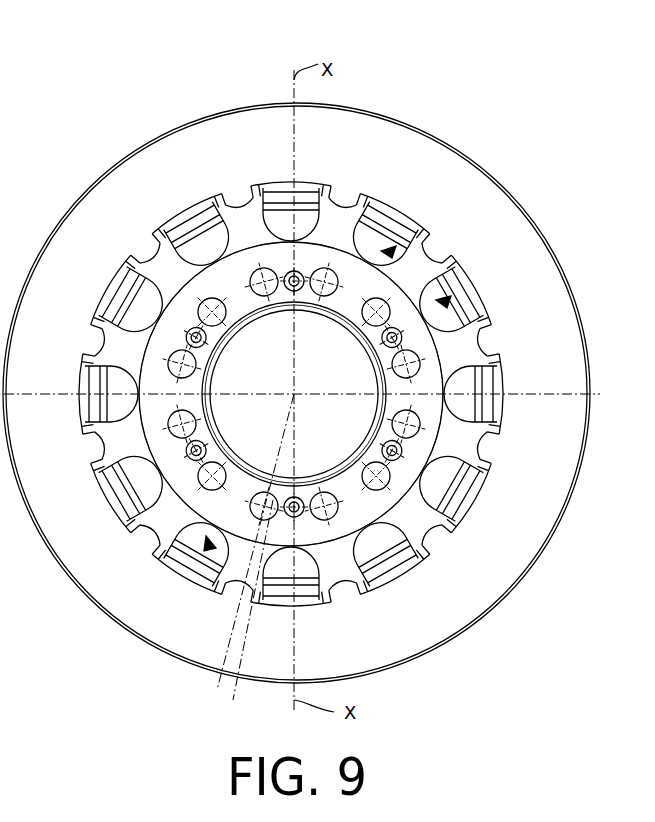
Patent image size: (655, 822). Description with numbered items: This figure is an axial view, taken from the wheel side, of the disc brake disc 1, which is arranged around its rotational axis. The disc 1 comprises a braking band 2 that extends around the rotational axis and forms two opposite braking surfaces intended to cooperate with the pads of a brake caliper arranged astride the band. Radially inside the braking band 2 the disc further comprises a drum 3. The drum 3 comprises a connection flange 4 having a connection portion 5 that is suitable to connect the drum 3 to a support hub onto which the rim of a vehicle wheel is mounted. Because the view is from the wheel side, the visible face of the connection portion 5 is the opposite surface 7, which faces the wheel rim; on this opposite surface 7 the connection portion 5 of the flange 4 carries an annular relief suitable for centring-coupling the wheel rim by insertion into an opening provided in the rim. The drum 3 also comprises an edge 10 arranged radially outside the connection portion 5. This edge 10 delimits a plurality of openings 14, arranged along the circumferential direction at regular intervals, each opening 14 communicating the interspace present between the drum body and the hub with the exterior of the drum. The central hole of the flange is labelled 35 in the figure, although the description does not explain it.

The disc brake disc 1 is at (441, 121).
The braking band 2 is at (445, 193).
The drum 3 is at (182, 226).
The connection flange 4 is at (115, 460).
The connection portion 5 is at (215, 518).
The opposite surface 7 is at (347, 533).
The edge 10 is at (338, 206).
The opening 14 is at (394, 250).
The central hole 35 is at (355, 343).